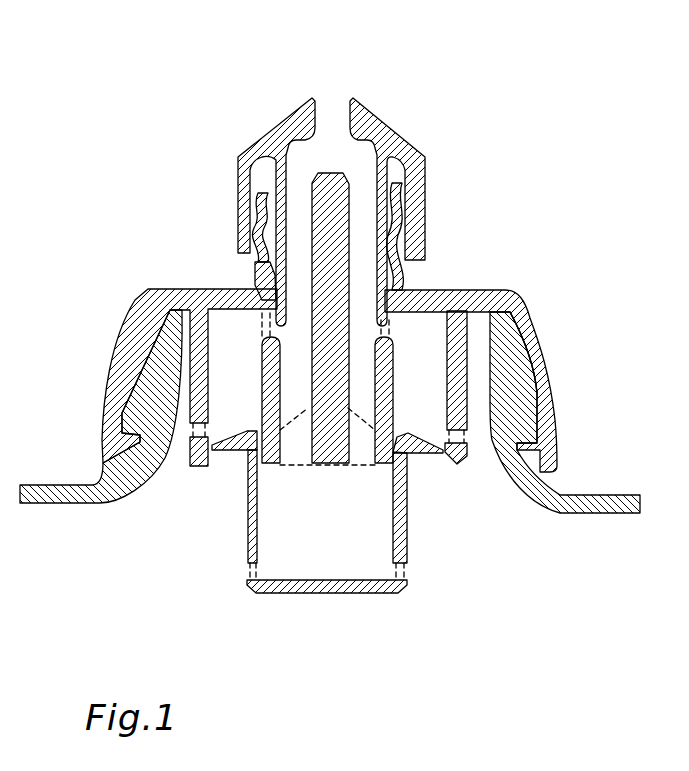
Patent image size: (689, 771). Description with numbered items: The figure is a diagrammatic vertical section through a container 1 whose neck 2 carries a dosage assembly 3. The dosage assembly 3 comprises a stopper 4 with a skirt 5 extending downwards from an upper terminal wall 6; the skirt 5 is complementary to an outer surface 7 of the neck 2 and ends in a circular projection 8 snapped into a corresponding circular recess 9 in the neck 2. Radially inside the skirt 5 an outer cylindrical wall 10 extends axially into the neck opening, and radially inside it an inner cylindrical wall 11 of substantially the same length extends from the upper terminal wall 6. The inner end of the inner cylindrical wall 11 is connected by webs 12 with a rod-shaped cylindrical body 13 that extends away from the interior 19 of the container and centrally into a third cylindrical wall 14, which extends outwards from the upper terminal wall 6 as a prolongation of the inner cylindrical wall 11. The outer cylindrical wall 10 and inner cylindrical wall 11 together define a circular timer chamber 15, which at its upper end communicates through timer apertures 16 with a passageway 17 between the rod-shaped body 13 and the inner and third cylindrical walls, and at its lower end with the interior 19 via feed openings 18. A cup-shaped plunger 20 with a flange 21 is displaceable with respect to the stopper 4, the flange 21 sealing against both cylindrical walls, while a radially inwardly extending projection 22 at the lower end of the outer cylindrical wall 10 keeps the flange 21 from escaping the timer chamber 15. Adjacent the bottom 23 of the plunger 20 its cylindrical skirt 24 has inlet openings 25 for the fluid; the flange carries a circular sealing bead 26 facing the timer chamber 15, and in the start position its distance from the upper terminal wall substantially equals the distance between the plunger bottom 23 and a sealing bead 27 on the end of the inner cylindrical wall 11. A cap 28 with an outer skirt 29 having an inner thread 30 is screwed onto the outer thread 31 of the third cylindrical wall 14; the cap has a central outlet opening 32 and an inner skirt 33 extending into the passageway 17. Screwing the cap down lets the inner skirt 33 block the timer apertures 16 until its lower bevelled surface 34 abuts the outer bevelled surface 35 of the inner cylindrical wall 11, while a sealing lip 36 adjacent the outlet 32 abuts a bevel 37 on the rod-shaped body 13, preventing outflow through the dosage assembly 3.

The container 1 is at (628, 512).
The neck 2 is at (553, 388).
The dosage assembly 3 is at (442, 203).
The stopper 4 is at (503, 293).
The skirt 5 is at (548, 366).
The upper terminal wall 6 is at (458, 290).
The outer surface 7 is at (542, 362).
The circular projection 8 is at (534, 456).
The circular recess 9 is at (521, 452).
The outer cylindrical wall 10 is at (490, 366).
The inner cylindrical wall 11 is at (435, 290).
The webs 12 is at (362, 452).
The rod-shaped cylindrical body 13 is at (240, 191).
The third cylindrical wall 14 is at (260, 232).
The timer chamber 15 is at (430, 382).
The timer apertures 16 is at (388, 374).
The passageway 17 is at (372, 347).
The feed openings 18 is at (456, 452).
The interior 19 is at (543, 583).
The cup-shaped plunger 20 is at (250, 557).
The flange 21 is at (234, 444).
The radially inwardly extending projection 22 is at (212, 448).
The bottom 23 is at (328, 594).
The cylindrical skirt 24 is at (248, 523).
The inlet openings 25 is at (404, 581).
The circular sealing bead 26 is at (400, 434).
The sealing bead 27 is at (268, 463).
The cap 28 is at (386, 133).
The outer skirt 29 is at (425, 184).
The inner thread 30 is at (408, 148).
The outer thread 31 is at (250, 271).
The central outlet opening 32 is at (346, 108).
The inner skirt 33 is at (272, 132).
The lower bevelled surface 34 is at (263, 325).
The outer bevelled surface 35 is at (147, 300).
The sealing lip 36 is at (313, 94).
The bevel 37 is at (352, 186).